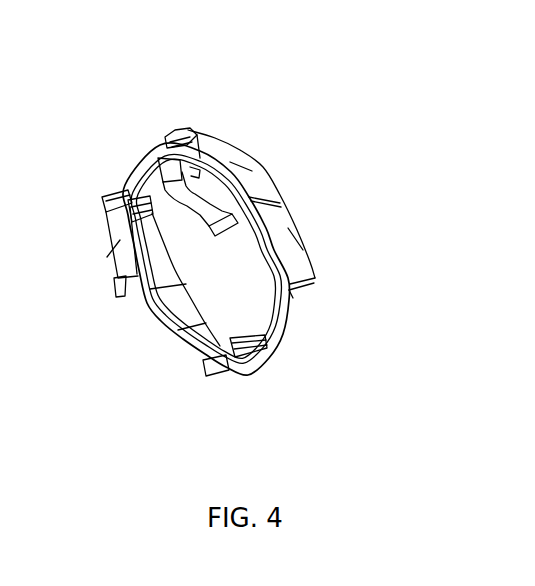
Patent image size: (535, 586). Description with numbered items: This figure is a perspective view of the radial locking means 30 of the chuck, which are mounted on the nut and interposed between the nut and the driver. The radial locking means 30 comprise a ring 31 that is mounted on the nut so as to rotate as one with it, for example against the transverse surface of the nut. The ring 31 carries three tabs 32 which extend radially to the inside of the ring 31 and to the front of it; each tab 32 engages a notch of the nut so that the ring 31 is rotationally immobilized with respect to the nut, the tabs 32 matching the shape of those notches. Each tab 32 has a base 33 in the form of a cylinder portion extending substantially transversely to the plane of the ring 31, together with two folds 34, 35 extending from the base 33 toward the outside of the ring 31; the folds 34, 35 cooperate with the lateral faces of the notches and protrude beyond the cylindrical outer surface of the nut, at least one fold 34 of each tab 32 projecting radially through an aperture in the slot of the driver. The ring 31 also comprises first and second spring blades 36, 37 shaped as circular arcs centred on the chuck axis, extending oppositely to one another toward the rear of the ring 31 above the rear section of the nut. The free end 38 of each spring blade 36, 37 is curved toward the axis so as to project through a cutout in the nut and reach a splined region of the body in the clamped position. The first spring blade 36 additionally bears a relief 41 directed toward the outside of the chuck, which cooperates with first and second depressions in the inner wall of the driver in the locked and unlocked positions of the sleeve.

The radial locking means 30 is at (305, 403).
The ring 31 is at (128, 163).
The tabs 32 is at (200, 373).
The base 33 is at (103, 254).
The fold 34 is at (107, 197).
The fold 35 is at (120, 280).
The first spring blade 36 is at (290, 227).
The second spring blade 37 is at (187, 310).
The free end 38 is at (130, 165).
The relief 41 is at (200, 133).